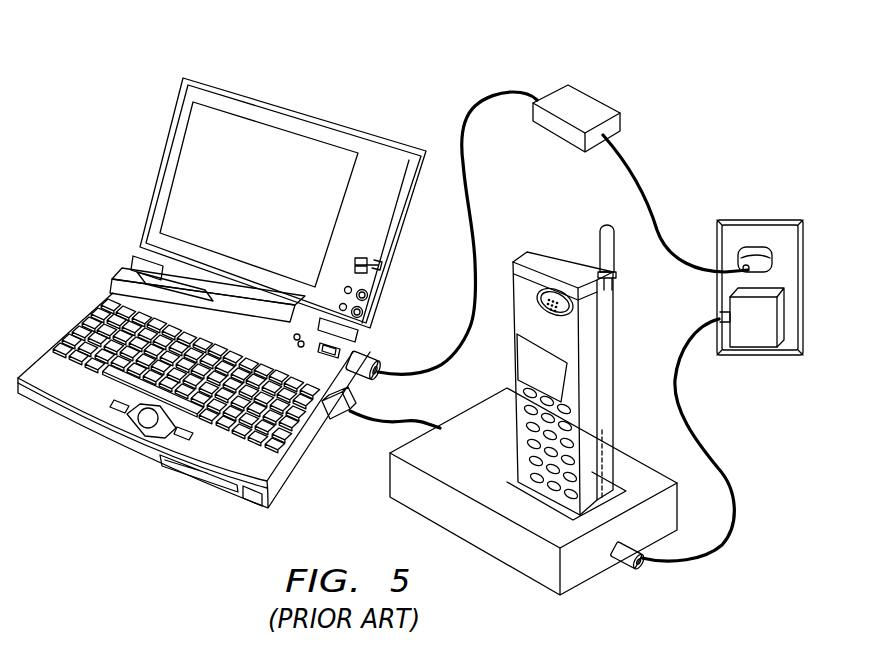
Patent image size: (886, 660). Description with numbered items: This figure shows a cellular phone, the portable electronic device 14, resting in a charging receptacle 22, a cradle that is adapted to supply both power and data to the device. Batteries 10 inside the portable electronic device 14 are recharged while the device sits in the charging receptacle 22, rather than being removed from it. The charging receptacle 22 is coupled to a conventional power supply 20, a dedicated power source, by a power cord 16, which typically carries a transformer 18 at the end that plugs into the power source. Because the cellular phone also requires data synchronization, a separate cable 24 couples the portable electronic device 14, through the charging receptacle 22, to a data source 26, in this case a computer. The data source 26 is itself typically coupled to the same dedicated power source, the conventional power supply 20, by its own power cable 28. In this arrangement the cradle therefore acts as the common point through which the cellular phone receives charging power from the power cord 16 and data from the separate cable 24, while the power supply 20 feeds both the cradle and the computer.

The batteries 10 is at (604, 437).
The portable electronic device 14 is at (550, 250).
The power cord 16 is at (735, 514).
The transformer 18 is at (578, 96).
The conventional power supply 20 is at (757, 247).
The charging receptacle 22 is at (468, 420).
The separate cable 24 is at (372, 418).
The data source 26 is at (249, 214).
The power cable 28 is at (641, 195).